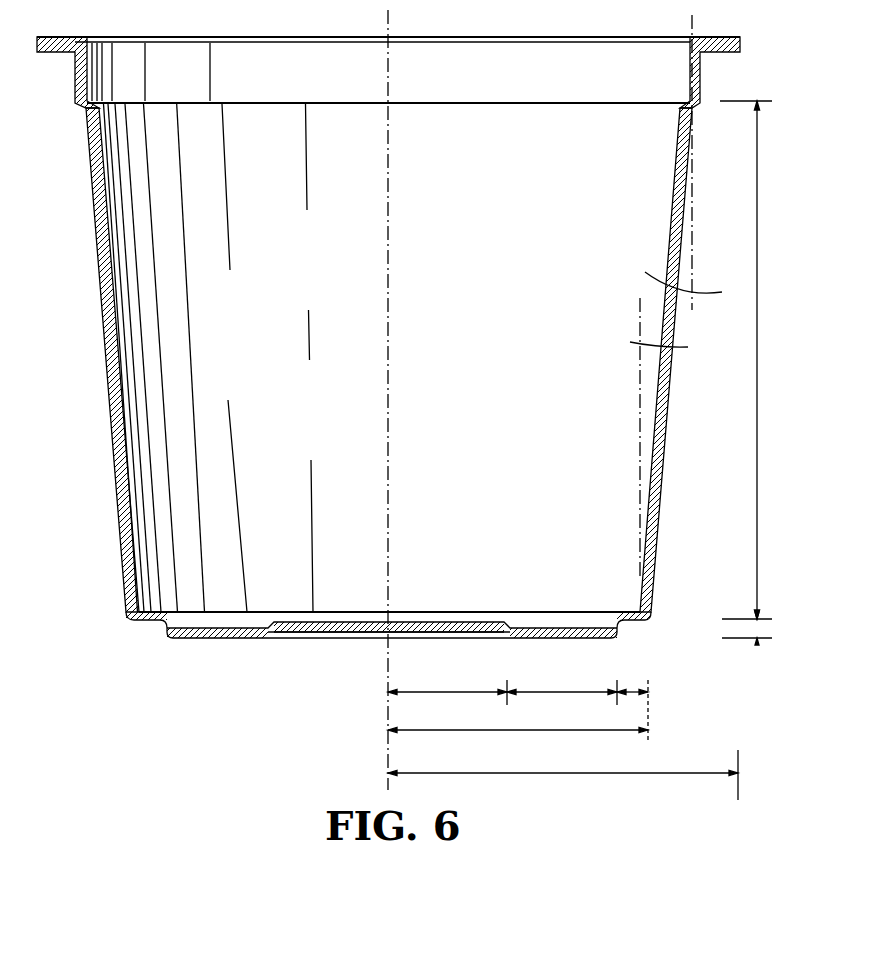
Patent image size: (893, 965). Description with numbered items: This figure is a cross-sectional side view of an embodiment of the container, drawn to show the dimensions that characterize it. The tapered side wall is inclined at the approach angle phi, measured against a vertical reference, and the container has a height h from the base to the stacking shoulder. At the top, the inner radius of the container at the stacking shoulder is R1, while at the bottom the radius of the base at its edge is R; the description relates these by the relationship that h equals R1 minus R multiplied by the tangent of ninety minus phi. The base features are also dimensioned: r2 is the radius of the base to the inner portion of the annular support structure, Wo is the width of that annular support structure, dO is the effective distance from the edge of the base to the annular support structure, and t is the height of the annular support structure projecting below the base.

The approach angle phi is at (676, 297).
The height of the container h is at (749, 360).
The height of the annular support structure t is at (755, 628).
The radius of the base to the inner portion of the annular support structure r2 is at (447, 683).
The width of the annular support structure Wo is at (562, 683).
The effective distance from the edge of the base to the annular support structure dO is at (630, 698).
The radius of the base at the edge of the base R is at (518, 721).
The inner radius of the container at the stacking shoulder R1 is at (563, 774).